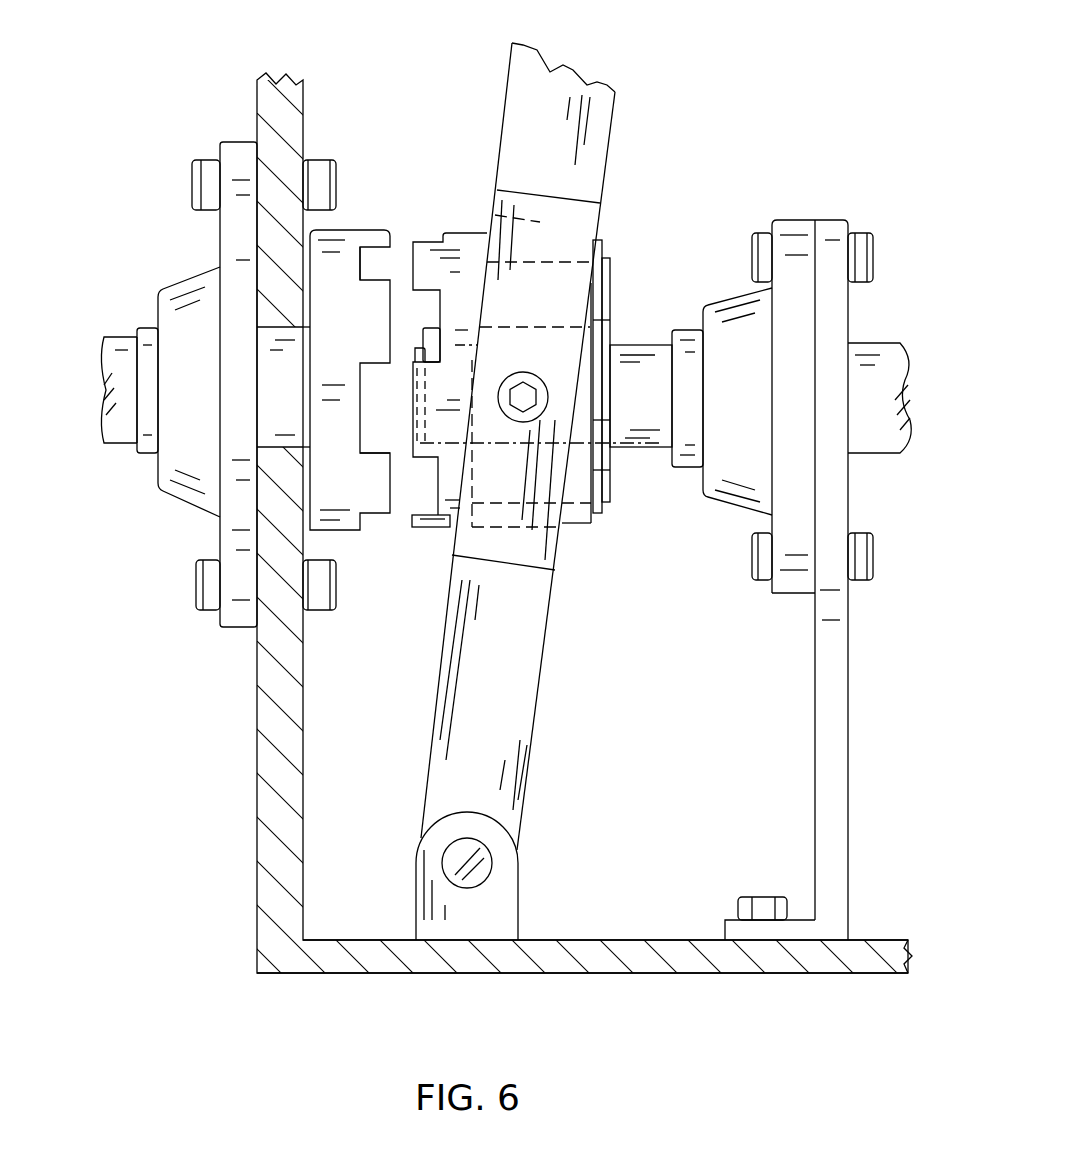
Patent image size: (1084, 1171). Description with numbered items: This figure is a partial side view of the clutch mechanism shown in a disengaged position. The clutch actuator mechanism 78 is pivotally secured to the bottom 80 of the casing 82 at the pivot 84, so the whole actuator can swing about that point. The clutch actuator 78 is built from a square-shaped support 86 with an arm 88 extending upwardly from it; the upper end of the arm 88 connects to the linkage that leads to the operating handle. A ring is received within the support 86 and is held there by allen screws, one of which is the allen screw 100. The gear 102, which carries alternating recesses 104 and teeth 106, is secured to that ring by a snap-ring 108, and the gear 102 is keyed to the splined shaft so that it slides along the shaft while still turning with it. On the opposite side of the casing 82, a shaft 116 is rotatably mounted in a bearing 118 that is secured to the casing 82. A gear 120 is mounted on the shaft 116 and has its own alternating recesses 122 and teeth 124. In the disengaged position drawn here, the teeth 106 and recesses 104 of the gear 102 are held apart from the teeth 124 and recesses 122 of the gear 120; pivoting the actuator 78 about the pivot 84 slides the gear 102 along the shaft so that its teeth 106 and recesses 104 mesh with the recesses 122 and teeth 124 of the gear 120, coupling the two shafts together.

The clutch actuator mechanism 78 is at (560, 745).
The bottom of casing 80 is at (615, 940).
The casing 82 is at (238, 880).
The pivot 84 is at (482, 863).
The square-shaped support 86 is at (600, 208).
The arm 88 is at (590, 135).
The allen screw 100 is at (535, 398).
The gear 102 is at (453, 210).
The recesses 104 is at (420, 307).
The teeth 106 is at (430, 528).
The snap-ring 108 is at (610, 283).
The shaft 116 is at (280, 413).
The bearing 118 is at (196, 298).
The gear 120 is at (370, 222).
The recesses 122 is at (374, 264).
The teeth 124 is at (386, 486).